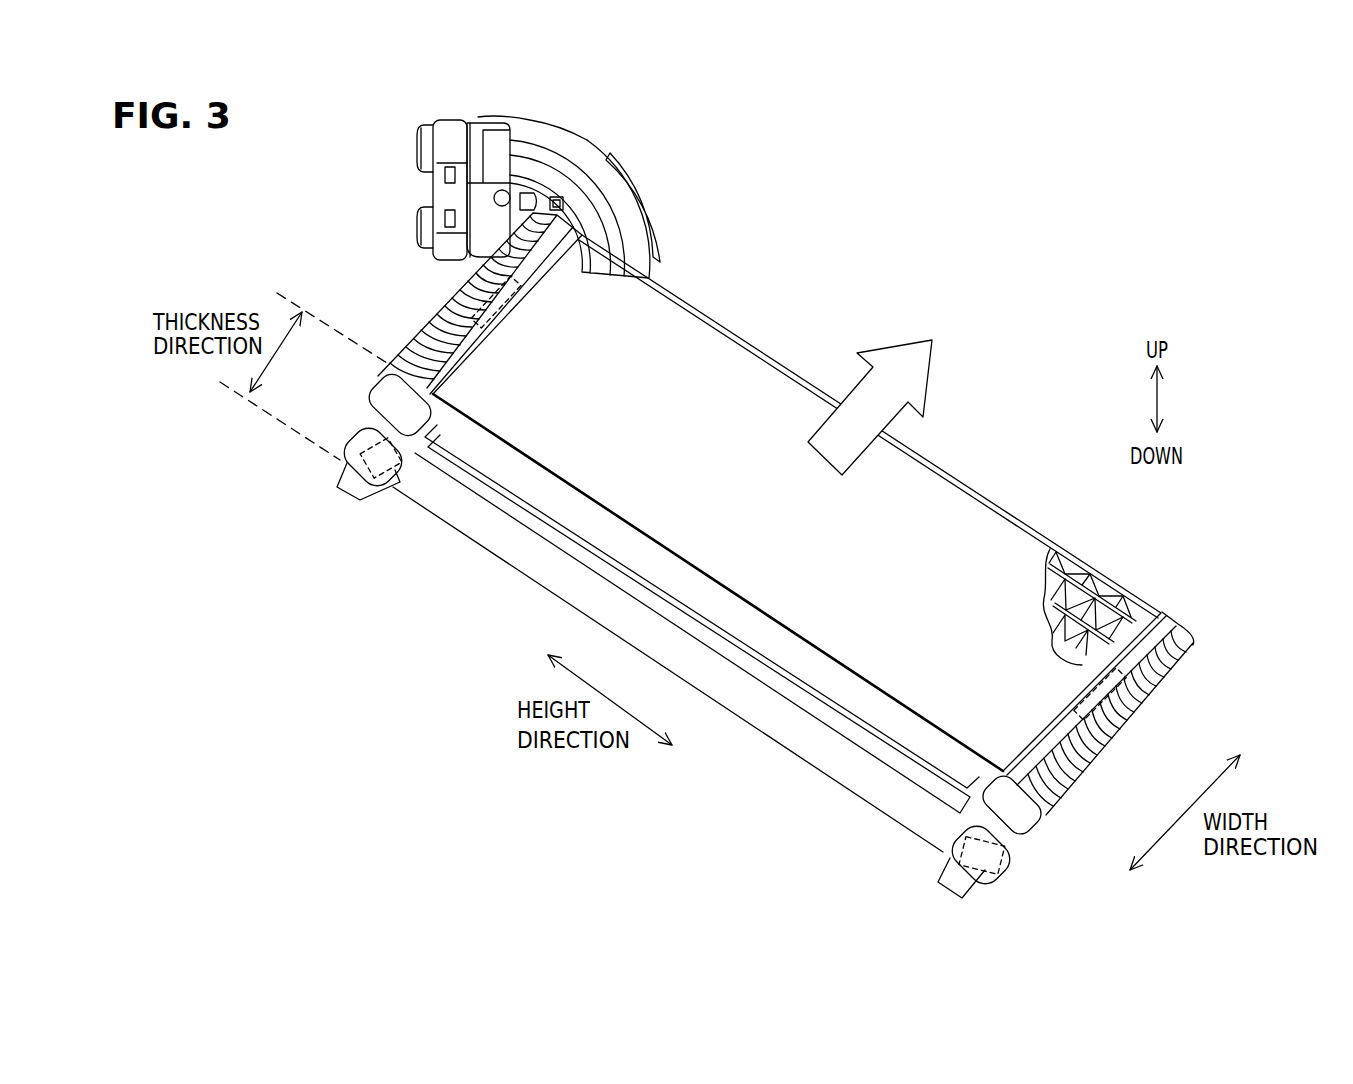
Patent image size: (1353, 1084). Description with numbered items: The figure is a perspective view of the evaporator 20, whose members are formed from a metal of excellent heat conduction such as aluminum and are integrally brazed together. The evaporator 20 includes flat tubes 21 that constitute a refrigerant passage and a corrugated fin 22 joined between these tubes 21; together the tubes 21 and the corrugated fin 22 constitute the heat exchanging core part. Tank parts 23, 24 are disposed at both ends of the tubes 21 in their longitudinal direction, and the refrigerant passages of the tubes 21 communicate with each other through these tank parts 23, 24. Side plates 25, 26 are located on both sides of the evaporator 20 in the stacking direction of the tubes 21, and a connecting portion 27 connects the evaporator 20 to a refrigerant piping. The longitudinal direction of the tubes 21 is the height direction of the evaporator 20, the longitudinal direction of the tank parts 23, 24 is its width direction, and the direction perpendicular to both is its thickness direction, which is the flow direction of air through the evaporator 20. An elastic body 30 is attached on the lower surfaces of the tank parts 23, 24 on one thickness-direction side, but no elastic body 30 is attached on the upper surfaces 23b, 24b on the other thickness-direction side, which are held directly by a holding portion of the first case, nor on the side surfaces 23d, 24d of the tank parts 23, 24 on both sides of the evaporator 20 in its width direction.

The evaporator 20 is at (777, 359).
The flat tubes 21 is at (1092, 604).
The corrugated fin 22 is at (1140, 599).
The tank part 23 is at (428, 340).
The upper surface of tank part 23b is at (453, 316).
The side surface of tank part 23d is at (387, 492).
The tank part 24 is at (1100, 773).
The upper surface of tank part 24b is at (1087, 772).
The side surface of tank part 24d is at (945, 832).
The side plate 25 is at (1033, 524).
The side plate 26 is at (789, 732).
The connecting portion 27 is at (452, 124).
The elastic body 30 is at (470, 290).